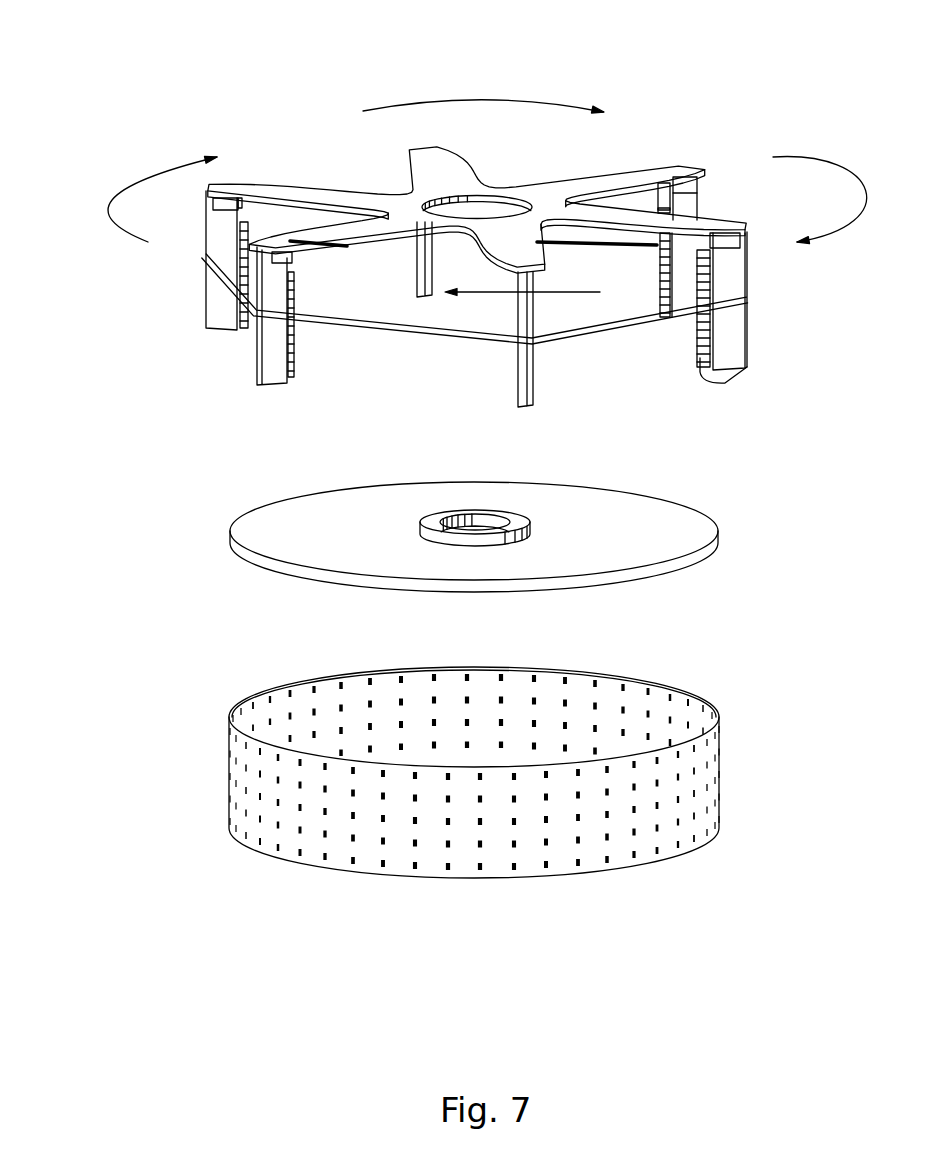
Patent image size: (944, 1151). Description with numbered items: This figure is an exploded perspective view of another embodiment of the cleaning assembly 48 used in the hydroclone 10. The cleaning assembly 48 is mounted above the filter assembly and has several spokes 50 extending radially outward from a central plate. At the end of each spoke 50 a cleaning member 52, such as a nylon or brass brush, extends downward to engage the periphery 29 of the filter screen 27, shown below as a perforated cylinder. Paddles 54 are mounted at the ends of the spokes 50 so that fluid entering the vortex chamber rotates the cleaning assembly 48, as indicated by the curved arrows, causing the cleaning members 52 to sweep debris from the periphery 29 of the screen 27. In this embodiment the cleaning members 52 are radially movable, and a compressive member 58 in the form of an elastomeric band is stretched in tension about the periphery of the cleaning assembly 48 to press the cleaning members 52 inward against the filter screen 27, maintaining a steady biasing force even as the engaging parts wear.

The hydroclone 10 is at (178, 91).
The cleaning assembly 48 is at (547, 197).
The spoke 50 is at (325, 193).
The paddle 54 is at (745, 290).
The cleaning member 52 is at (723, 381).
The compressive member 58 is at (633, 325).
The filter screen 27 is at (708, 707).
The periphery 29 is at (397, 866).